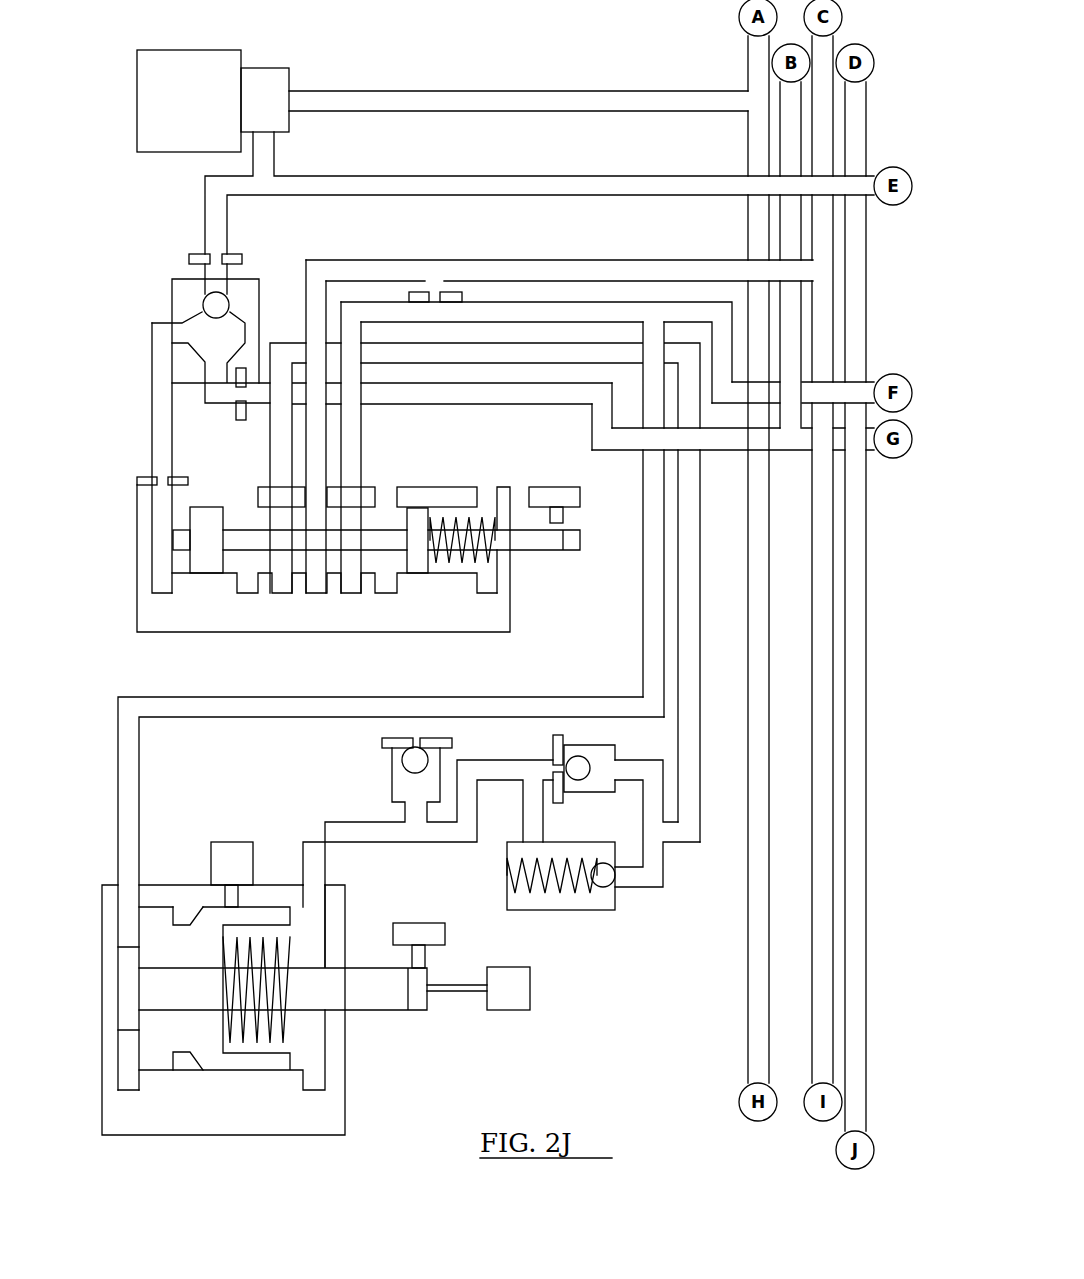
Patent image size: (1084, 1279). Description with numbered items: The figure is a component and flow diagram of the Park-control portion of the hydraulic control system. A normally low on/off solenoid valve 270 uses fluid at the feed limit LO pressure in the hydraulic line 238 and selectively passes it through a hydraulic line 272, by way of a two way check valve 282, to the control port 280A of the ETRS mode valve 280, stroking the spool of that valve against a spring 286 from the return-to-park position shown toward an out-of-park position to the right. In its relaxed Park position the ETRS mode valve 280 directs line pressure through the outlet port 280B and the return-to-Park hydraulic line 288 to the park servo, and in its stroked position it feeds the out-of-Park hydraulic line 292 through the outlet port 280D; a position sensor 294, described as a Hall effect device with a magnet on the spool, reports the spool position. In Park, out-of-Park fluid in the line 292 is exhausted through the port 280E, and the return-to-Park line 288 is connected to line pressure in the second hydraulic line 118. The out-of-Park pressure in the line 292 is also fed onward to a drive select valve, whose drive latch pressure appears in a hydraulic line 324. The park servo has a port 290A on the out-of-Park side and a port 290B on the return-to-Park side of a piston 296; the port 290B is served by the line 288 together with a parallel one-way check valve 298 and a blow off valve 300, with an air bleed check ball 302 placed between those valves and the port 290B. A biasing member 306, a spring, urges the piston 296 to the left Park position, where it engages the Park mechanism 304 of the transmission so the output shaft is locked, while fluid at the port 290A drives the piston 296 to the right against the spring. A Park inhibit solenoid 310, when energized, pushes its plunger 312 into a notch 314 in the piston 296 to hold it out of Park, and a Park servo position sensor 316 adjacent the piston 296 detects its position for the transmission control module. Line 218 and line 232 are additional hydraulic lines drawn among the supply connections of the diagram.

The normally low on/off solenoid valve 270 is at (226, 22).
The hydraulic line 238 is at (492, 100).
The hydraulic line 272 is at (440, 188).
The fluid line 218 is at (555, 275).
The two way check valve 282 is at (245, 292).
The hydraulic line 288 is at (288, 345).
The hydraulic line 292 is at (357, 408).
The hydraulic line 324 is at (625, 435).
The ETRS mode valve 280 is at (334, 532).
The control port 280A is at (165, 485).
The outlet port 280B is at (282, 490).
The outlet port 280D is at (355, 490).
The port 280E is at (390, 497).
The spring 286 is at (487, 562).
The position sensor 294 is at (550, 495).
The air bleed check ball 302 is at (410, 760).
The one-way check valve 298 is at (582, 755).
The blow off valve 300 is at (583, 900).
The Park servo position sensor 316 is at (422, 935).
The Park mechanism 304 is at (520, 992).
The piston 296 is at (249, 983).
The port 290A is at (120, 890).
The port 290B is at (275, 952).
The notch 314 is at (180, 905).
The plunger 312 is at (262, 880).
The Park inhibit solenoid 310 is at (234, 852).
The biasing member 306 is at (300, 1035).
The fluid line 232 is at (860, 850).
The second hydraulic line 118 is at (825, 930).